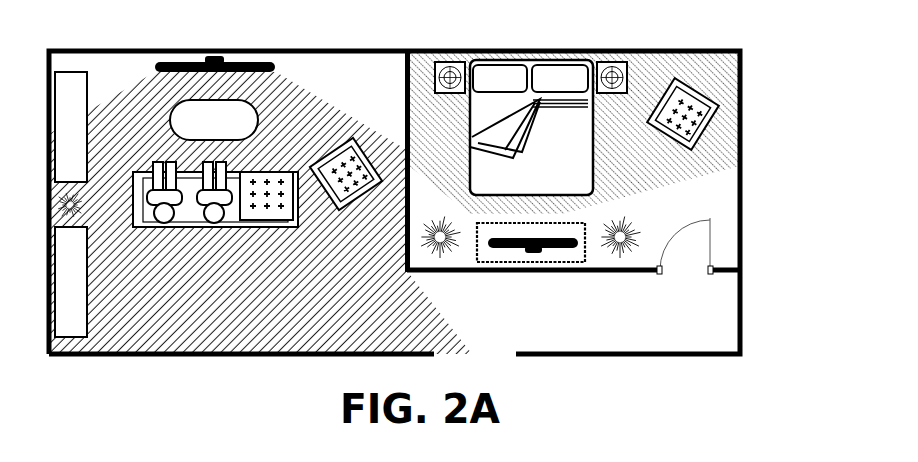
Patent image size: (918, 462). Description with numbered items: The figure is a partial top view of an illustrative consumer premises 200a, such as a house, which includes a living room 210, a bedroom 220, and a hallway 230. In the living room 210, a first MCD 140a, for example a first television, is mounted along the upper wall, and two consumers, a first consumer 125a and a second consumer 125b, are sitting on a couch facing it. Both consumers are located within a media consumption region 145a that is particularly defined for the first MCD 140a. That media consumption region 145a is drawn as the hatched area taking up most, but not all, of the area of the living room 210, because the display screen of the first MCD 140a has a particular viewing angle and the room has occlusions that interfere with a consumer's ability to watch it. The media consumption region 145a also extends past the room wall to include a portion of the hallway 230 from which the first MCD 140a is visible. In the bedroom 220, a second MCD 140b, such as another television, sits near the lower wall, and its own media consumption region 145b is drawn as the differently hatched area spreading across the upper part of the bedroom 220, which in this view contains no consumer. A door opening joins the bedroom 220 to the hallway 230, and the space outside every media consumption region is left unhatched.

The consumer premises 200a is at (775, 102).
The living room 210 is at (388, 78).
The bedroom 220 is at (728, 208).
The hallway 230 is at (725, 340).
The first MCD 140a is at (191, 62).
The second MCD 140b is at (543, 252).
The first consumer 125a is at (173, 225).
The second consumer 125b is at (205, 225).
The media consumption region 145a is at (260, 213).
The media consumption region 145b is at (573, 133).